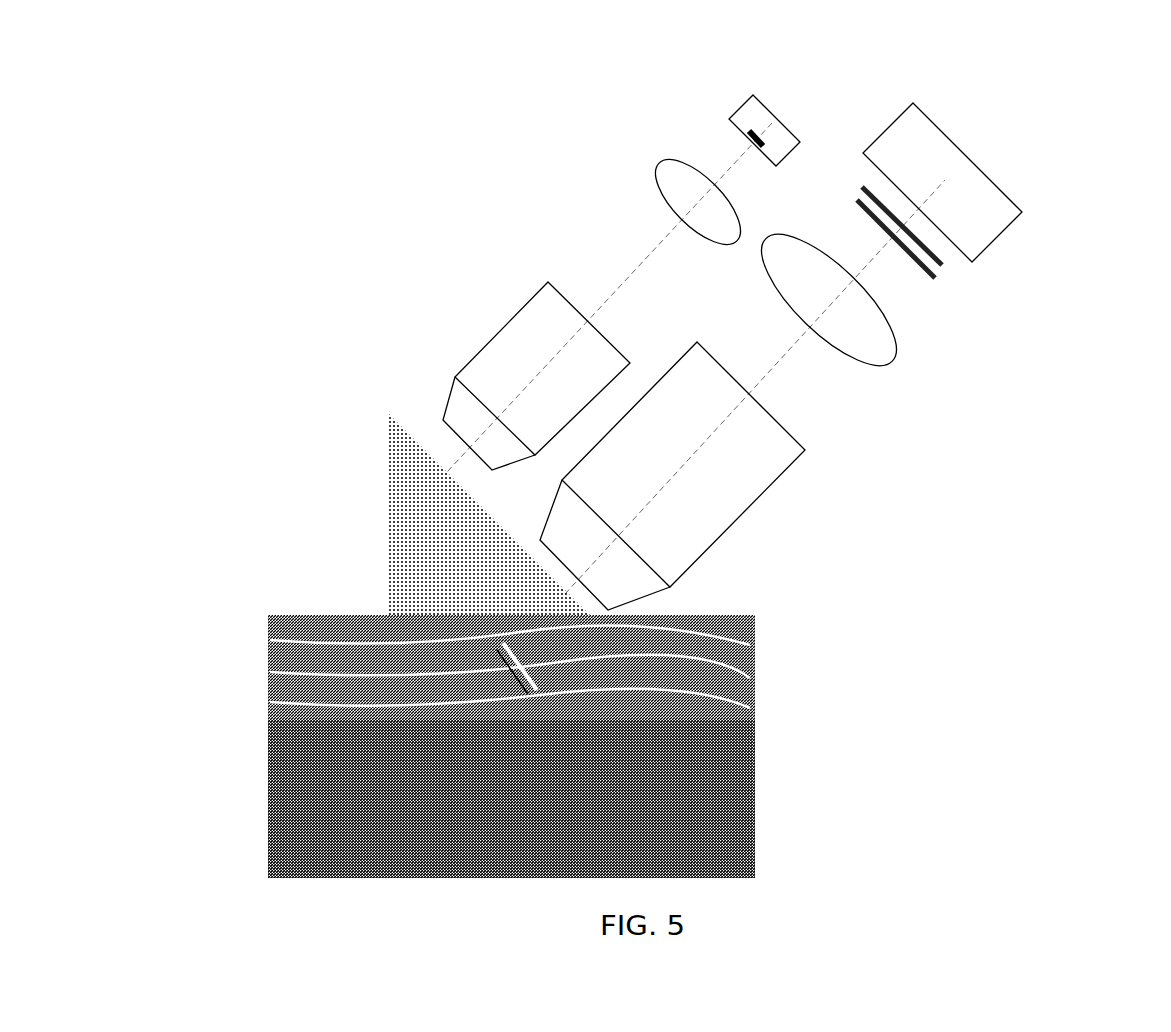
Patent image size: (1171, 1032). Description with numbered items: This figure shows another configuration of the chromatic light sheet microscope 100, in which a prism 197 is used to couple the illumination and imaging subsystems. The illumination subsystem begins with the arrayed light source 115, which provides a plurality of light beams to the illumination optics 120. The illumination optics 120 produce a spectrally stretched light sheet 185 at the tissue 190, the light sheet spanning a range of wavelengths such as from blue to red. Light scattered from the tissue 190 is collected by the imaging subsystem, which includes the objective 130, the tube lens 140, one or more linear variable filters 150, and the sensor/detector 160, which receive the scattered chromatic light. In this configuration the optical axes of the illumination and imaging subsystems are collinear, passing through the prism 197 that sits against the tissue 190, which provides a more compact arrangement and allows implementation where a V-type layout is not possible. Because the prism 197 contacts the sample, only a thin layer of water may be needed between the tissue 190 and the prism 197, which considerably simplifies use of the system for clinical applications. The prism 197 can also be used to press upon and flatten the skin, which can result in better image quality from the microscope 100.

The chromatic light sheet microscope 100 is at (279, 152).
The arrayed light source 115 is at (716, 112).
The illumination optics 120 is at (640, 200).
The objective 130 is at (772, 462).
The tube lens 140 is at (903, 364).
The linear variable filter 150 is at (942, 286).
The sensor/detector 160 is at (997, 173).
The spectrally stretched light sheet 185 is at (535, 658).
The tissue 190 is at (706, 693).
The prism 197 is at (380, 537).